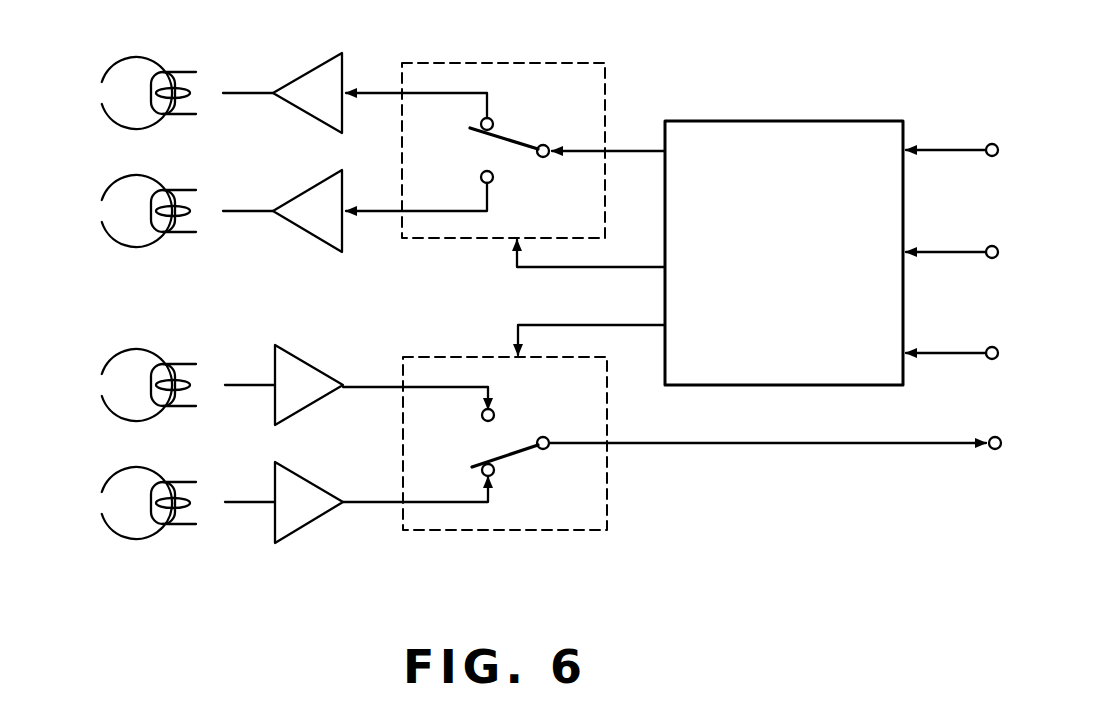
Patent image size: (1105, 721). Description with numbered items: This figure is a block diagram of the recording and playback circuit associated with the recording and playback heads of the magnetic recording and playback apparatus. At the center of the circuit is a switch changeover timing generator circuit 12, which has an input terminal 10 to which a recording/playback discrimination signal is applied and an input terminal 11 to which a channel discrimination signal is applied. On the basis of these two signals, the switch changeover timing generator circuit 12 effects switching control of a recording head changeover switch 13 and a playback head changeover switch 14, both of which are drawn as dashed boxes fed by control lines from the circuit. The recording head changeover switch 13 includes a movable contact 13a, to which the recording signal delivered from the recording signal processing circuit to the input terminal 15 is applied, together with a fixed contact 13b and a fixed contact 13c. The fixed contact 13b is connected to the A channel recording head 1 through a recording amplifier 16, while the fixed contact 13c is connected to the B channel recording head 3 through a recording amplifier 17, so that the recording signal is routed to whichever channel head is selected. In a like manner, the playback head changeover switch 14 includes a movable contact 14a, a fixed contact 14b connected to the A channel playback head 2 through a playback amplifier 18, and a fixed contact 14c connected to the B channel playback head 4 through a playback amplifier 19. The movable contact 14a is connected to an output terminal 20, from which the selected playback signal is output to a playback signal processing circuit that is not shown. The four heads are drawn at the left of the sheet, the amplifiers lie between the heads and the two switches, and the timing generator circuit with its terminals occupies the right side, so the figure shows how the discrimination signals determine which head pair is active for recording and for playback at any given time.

The A channel recording head 1 is at (103, 93).
The A channel playback head 2 is at (103, 385).
The B channel recording head 3 is at (103, 211).
The B channel playback head 4 is at (103, 503).
The recording amplifier 16 is at (305, 82).
The recording amplifier 17 is at (305, 199).
The playback amplifier 18 is at (297, 373).
The playback amplifier 19 is at (300, 493).
The recording head changeover switch 13 is at (707, 129).
The movable contact 13a is at (519, 143).
The fixed contact 13b is at (482, 125).
The fixed contact 13c is at (481, 177).
The playback head changeover switch 14 is at (715, 465).
The movable contact 14a is at (515, 454).
The fixed contact 14b is at (482, 416).
The fixed contact 14c is at (482, 470).
The switch changeover timing generator circuit 12 is at (777, 120).
The input terminal 15 is at (998, 150).
The input terminal 10 is at (998, 252).
The input terminal 11 is at (998, 353).
The output terminal 20 is at (1001, 443).